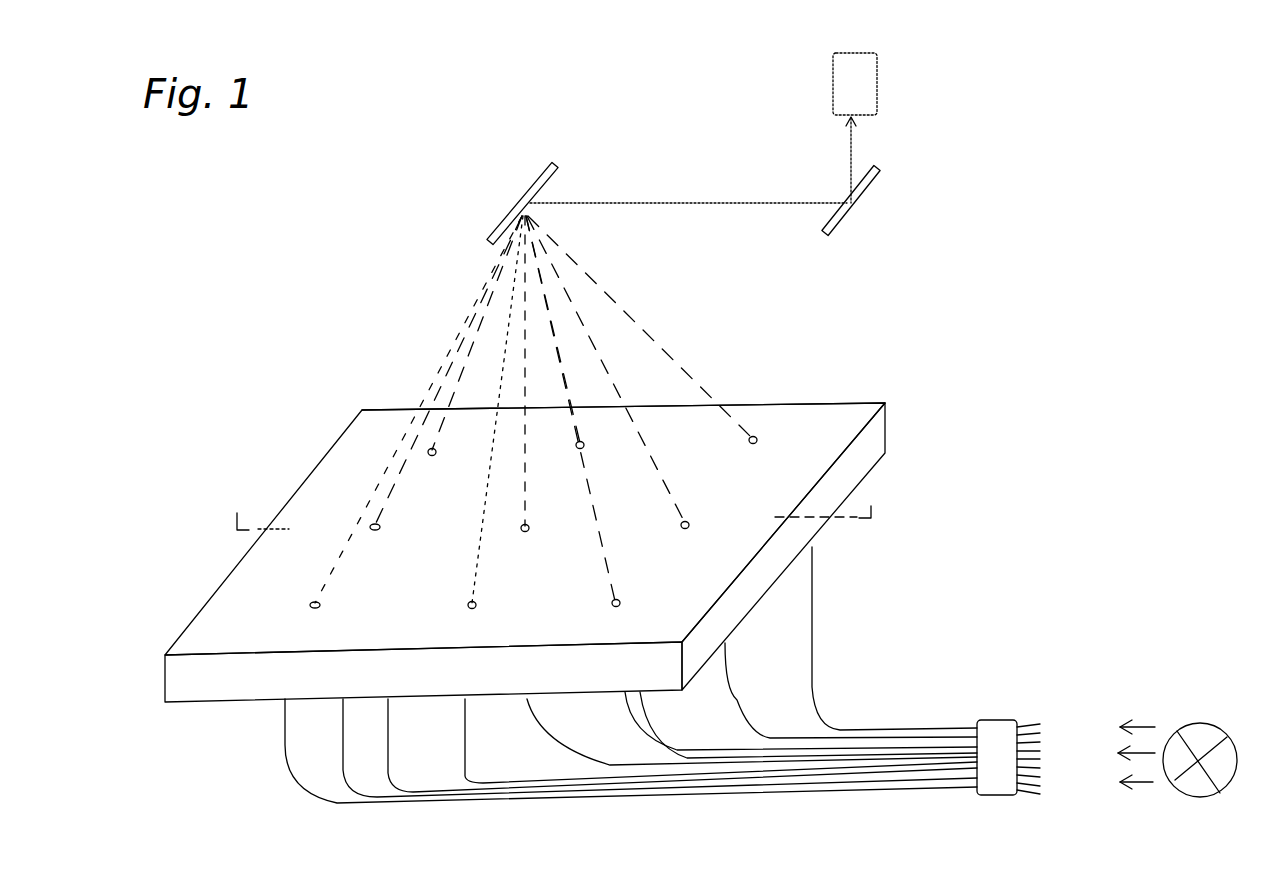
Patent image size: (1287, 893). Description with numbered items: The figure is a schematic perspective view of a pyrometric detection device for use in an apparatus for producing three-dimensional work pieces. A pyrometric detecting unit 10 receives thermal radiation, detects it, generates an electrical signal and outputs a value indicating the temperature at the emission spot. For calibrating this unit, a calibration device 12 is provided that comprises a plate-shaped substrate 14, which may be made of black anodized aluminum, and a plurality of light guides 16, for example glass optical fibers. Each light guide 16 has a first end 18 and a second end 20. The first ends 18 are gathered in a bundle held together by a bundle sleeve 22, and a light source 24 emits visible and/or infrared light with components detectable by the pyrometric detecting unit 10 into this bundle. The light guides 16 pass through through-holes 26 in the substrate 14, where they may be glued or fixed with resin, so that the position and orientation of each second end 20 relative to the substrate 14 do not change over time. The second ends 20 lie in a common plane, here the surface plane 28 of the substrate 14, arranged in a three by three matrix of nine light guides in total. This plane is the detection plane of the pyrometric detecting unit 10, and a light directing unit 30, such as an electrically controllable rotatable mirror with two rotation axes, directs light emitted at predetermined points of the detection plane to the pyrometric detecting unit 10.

The pyrometric detecting unit 10 is at (867, 100).
The calibration device 12 is at (989, 487).
The substrate 14 is at (213, 690).
The light guides 16 is at (884, 712).
The first ends 18 is at (1037, 720).
The second ends 20 is at (758, 440).
The bundle sleeve 22 is at (1008, 768).
The light source 24 is at (1209, 722).
The through-holes 26 is at (621, 602).
The surface plane 28 is at (238, 643).
The light directing unit 30 is at (539, 170).